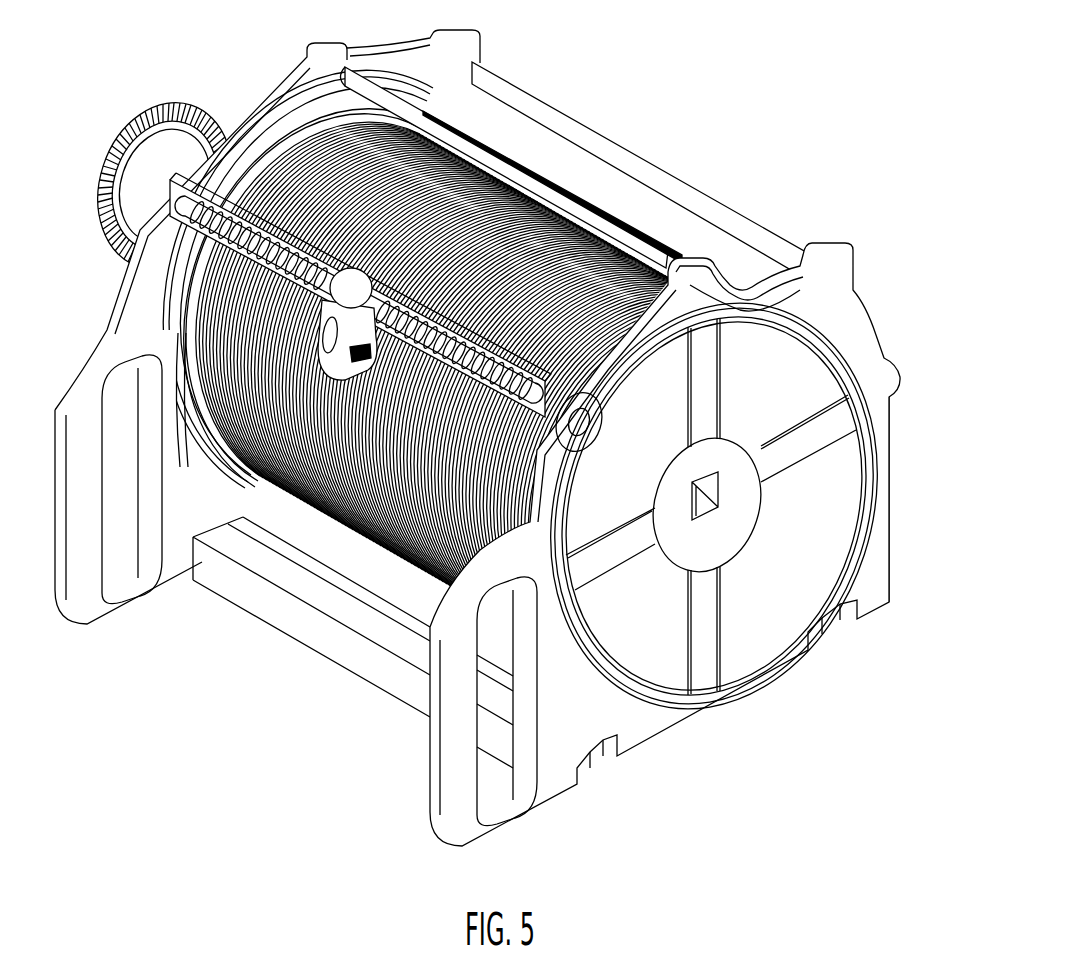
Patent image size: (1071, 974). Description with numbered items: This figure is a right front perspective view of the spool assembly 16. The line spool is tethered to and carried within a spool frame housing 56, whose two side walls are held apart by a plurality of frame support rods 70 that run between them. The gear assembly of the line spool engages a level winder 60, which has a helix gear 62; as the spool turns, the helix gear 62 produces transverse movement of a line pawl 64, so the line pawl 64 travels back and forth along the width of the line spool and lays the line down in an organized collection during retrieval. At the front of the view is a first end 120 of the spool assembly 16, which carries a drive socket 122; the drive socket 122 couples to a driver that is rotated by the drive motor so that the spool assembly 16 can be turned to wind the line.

The spool assembly 16 is at (501, 438).
The spool frame housing 56 is at (137, 137).
The level winder 60 is at (195, 203).
The helix gear 62 is at (200, 236).
The line pawl 64 is at (320, 300).
The frame support rods 70 is at (663, 163).
The first end 120 is at (690, 544).
The drive socket 122 is at (722, 496).